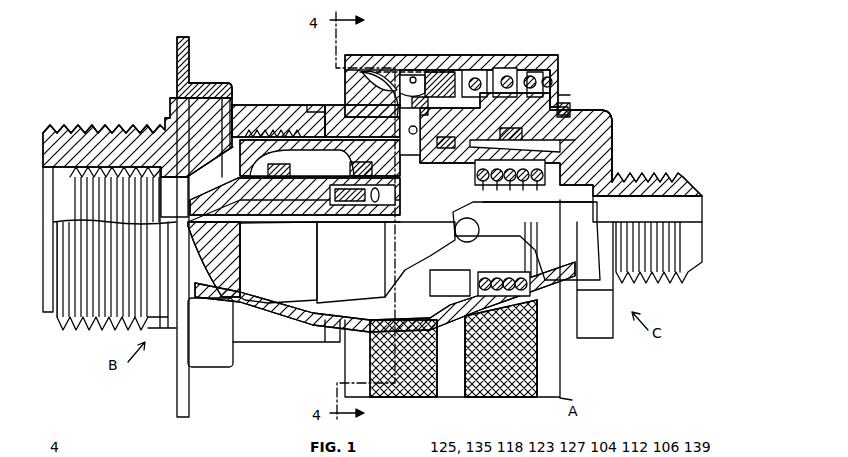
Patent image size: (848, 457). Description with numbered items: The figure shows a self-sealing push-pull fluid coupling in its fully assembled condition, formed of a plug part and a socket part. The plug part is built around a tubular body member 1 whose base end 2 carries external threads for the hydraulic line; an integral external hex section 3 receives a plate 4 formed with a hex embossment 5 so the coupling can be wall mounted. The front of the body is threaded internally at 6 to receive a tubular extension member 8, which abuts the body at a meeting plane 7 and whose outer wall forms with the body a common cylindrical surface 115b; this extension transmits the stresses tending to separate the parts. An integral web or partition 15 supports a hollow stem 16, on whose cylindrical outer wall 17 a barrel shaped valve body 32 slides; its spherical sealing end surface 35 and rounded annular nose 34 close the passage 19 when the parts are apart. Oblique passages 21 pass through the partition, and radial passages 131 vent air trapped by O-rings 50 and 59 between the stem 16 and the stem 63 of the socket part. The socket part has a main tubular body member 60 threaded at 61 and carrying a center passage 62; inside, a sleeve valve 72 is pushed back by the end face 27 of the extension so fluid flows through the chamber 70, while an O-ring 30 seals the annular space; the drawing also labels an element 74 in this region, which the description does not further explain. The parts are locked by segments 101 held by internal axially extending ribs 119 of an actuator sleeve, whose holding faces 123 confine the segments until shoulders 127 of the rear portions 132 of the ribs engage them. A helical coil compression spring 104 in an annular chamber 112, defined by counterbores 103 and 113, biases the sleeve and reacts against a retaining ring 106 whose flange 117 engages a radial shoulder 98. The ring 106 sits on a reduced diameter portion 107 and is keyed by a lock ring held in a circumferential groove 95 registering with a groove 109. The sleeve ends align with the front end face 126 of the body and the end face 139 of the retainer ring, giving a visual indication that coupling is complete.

The tubular body member 1 is at (150, 140).
The base end 2 is at (75, 130).
The external hex section 3 is at (180, 115).
The plate 4 is at (180, 72).
The hex embossment 5 is at (216, 84).
The internal threads 6 is at (264, 120).
The meeting plane 7 is at (318, 105).
The tubular extension member 8 is at (416, 137).
The web or partition 15 is at (195, 206).
The hollow stem 16 is at (262, 222).
The cylindrical outer wall 17 is at (292, 168).
The passage 19 is at (258, 162).
The oblique passages 21 is at (192, 188).
The end face 27 is at (561, 144).
The O-ring 30 is at (500, 172).
The barrel shaped valve body 32 is at (296, 140).
The annular nose 34 is at (381, 121).
The spherical sealing end surface 35 is at (370, 255).
The O-ring 50 is at (276, 190).
The O-ring 59 is at (348, 195).
The main tubular body member 60 is at (614, 119).
The threads 61 is at (650, 282).
The center passage 62 is at (668, 219).
The stem 63 is at (547, 225).
The chamber 70 is at (452, 285).
The sleeve valve 72 is at (485, 275).
The passage 74 is at (565, 150).
The circumferential groove 95 is at (566, 108).
The radial shoulder 98 is at (498, 85).
The segments 101 is at (362, 121).
The counterbore 103 is at (475, 78).
The helical coil compression spring 104 is at (538, 70).
The retaining ring 106 is at (562, 97).
The reduced diameter portion 107 is at (605, 112).
The groove 109 is at (572, 135).
The annular chamber 112 is at (529, 70).
The counterbore 113 is at (510, 70).
The common cylindrical surface 115b is at (370, 80).
The flange 117 is at (554, 60).
The internal axially extending ribs 119 is at (398, 88).
The holding faces 123 is at (412, 78).
The front end face 126 is at (350, 90).
The shoulders 127 is at (440, 90).
The radial passages 131 is at (232, 170).
The rear portions of the ribs 132 is at (470, 75).
The end face 139 is at (565, 75).